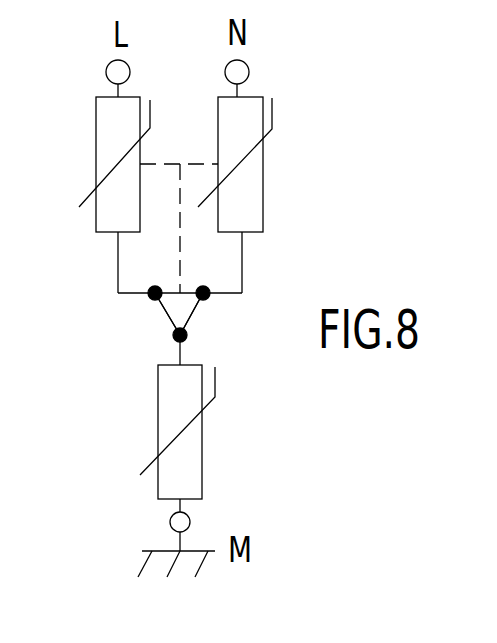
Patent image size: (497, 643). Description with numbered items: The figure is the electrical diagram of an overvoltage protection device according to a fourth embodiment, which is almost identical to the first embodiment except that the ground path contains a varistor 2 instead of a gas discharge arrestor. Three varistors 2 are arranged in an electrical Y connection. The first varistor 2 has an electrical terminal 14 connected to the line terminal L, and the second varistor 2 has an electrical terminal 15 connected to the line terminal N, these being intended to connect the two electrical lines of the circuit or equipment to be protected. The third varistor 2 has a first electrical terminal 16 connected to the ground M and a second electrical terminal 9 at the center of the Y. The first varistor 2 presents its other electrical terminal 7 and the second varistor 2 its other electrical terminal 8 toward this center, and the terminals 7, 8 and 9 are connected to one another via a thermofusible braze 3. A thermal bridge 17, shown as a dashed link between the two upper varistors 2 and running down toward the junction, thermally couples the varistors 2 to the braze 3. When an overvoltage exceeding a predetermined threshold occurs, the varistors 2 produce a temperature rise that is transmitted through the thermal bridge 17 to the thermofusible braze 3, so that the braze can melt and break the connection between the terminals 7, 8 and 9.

The varistor 2 is at (96, 142).
The thermofusible braze 3 is at (191, 315).
The first electrical terminal of the first varistor 7 is at (151, 298).
The first electrical terminal of the second varistor 8 is at (208, 298).
The second electrical terminal 9 is at (172, 341).
The electrical terminal 14 is at (108, 68).
The electrical terminal 15 is at (249, 71).
The first electrical terminal 16 is at (169, 523).
The thermal bridge 17 is at (178, 262).